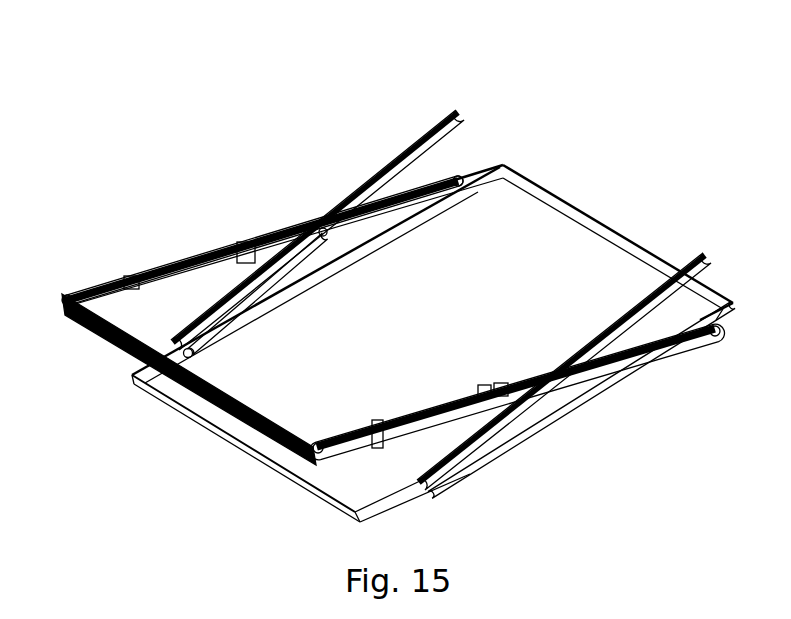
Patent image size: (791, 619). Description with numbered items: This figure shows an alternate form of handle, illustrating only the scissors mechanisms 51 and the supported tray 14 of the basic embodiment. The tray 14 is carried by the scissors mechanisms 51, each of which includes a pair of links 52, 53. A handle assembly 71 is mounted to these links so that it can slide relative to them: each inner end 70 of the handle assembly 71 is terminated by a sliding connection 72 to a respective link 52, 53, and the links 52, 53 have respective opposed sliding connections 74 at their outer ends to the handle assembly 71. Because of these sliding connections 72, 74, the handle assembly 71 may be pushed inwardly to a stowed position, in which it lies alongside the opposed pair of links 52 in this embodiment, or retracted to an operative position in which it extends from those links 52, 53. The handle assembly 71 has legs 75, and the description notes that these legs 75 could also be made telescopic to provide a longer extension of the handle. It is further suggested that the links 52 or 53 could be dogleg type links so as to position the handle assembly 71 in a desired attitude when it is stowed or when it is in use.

The supported tray 14 is at (397, 315).
The scissors mechanism 51 is at (344, 160).
The link 52 is at (298, 222).
The link 53 is at (447, 112).
The inner end 70 is at (232, 243).
The handle assembly 71 is at (95, 250).
The sliding connection 72 is at (228, 247).
The sliding connection 74 is at (133, 276).
The leg 75 is at (90, 294).